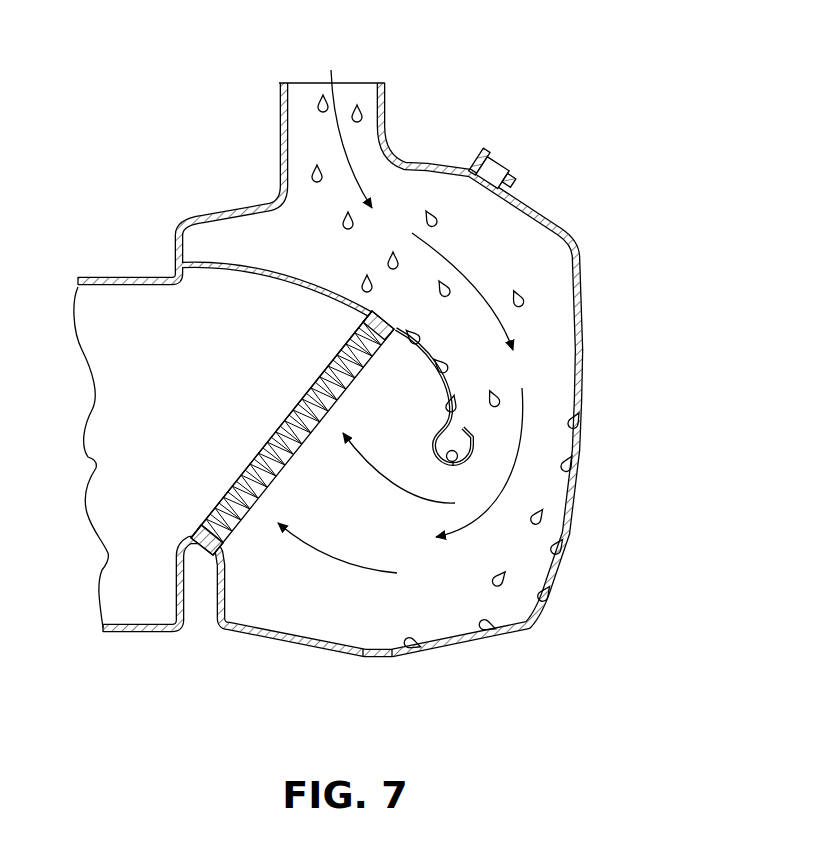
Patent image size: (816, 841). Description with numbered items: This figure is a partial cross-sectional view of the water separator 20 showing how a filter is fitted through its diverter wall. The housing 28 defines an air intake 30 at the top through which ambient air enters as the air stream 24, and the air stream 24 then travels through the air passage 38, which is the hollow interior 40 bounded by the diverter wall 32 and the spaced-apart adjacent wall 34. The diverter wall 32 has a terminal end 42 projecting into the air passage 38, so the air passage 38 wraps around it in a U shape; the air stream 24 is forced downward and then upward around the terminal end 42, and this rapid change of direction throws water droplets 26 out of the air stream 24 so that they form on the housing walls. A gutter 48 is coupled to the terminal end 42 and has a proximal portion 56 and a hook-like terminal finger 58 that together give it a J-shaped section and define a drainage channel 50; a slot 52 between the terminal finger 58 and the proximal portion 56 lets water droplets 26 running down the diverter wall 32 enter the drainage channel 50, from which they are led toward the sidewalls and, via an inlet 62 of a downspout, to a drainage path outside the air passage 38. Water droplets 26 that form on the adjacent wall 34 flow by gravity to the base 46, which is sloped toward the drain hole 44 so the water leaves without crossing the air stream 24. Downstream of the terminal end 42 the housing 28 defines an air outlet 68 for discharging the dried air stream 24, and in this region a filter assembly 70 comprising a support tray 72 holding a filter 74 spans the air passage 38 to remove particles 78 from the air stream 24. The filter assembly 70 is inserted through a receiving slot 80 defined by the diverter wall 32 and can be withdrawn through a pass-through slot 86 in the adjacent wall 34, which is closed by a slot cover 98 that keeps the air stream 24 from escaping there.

The water separator 20 is at (207, 163).
The air stream 24 is at (458, 265).
The water droplets 26 is at (358, 117).
The housing 28 is at (594, 213).
The air intake 30 is at (359, 73).
The diverter wall 32 is at (274, 280).
The adjacent wall 34 is at (584, 350).
The air passage 38 is at (546, 345).
The hollow interior 40 is at (584, 435).
The terminal end 42 is at (449, 426).
The drain hole 44 is at (378, 658).
The base 46 is at (450, 643).
The gutter 48 is at (480, 443).
The drainage channel 50 is at (434, 445).
The slot 52 is at (465, 414).
The proximal portion 56 is at (432, 450).
The terminal finger 58 is at (472, 438).
The inlet 62 is at (453, 466).
The air outlet 68 is at (129, 414).
The filter assembly 70 is at (282, 433).
The support tray 72 is at (252, 480).
The filter 74 is at (270, 457).
The particles 78 is at (513, 242).
The receiving slot 80 is at (363, 317).
The pass-through slot 86 is at (470, 185).
The slot cover 98 is at (480, 147).